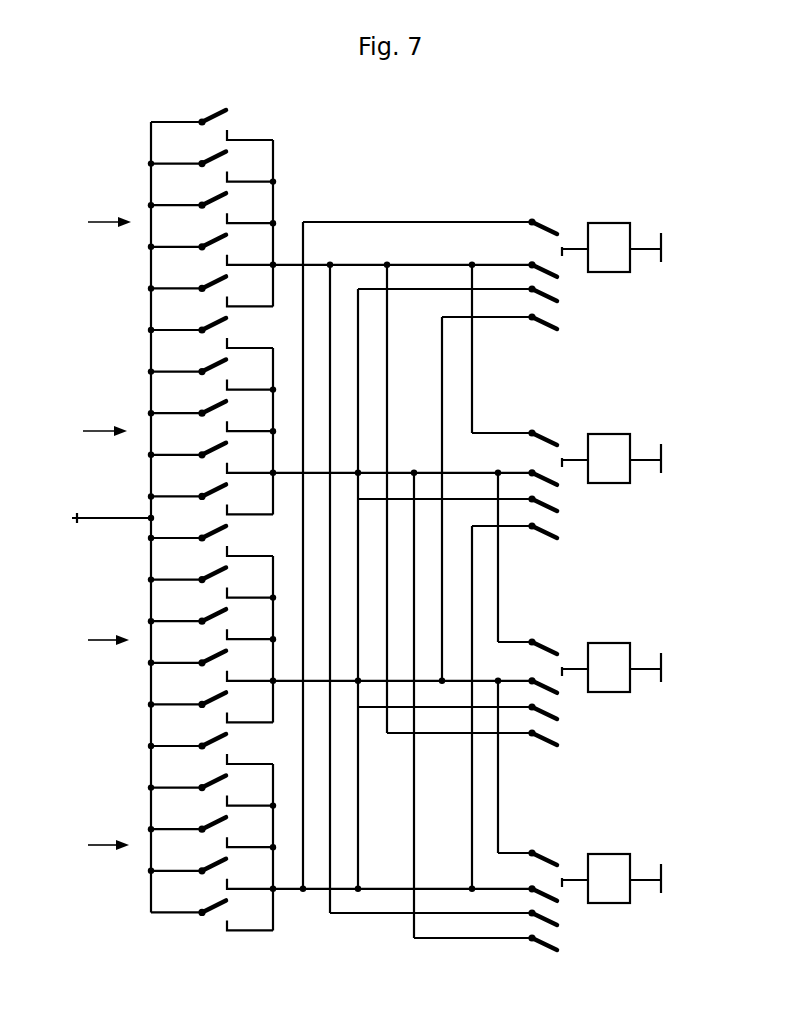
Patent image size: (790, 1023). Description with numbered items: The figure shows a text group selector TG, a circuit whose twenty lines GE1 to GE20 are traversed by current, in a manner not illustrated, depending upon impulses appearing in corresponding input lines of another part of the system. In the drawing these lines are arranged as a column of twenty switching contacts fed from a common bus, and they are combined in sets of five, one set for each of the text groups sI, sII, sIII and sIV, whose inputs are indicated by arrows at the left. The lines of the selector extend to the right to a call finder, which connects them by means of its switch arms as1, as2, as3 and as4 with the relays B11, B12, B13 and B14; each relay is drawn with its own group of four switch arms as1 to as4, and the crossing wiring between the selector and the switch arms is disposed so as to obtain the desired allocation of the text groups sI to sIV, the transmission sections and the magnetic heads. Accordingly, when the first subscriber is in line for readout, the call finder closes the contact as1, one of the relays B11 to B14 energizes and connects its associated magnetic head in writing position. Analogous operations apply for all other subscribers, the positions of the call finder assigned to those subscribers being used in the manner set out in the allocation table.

The text group selector TG is at (248, 140).
The switch arm as1 is at (533, 571).
The switch arm as2 is at (527, 596).
The switch arm as3 is at (527, 623).
The switch arm as4 is at (533, 532).
The relay B11 is at (611, 237).
The relay B12 is at (611, 868).
The relay B13 is at (611, 657).
The relay B14 is at (611, 448).
The text group sI is at (94, 221).
The text group sII is at (88, 431).
The text group sIII is at (85, 639).
The text group sIV is at (84, 844).